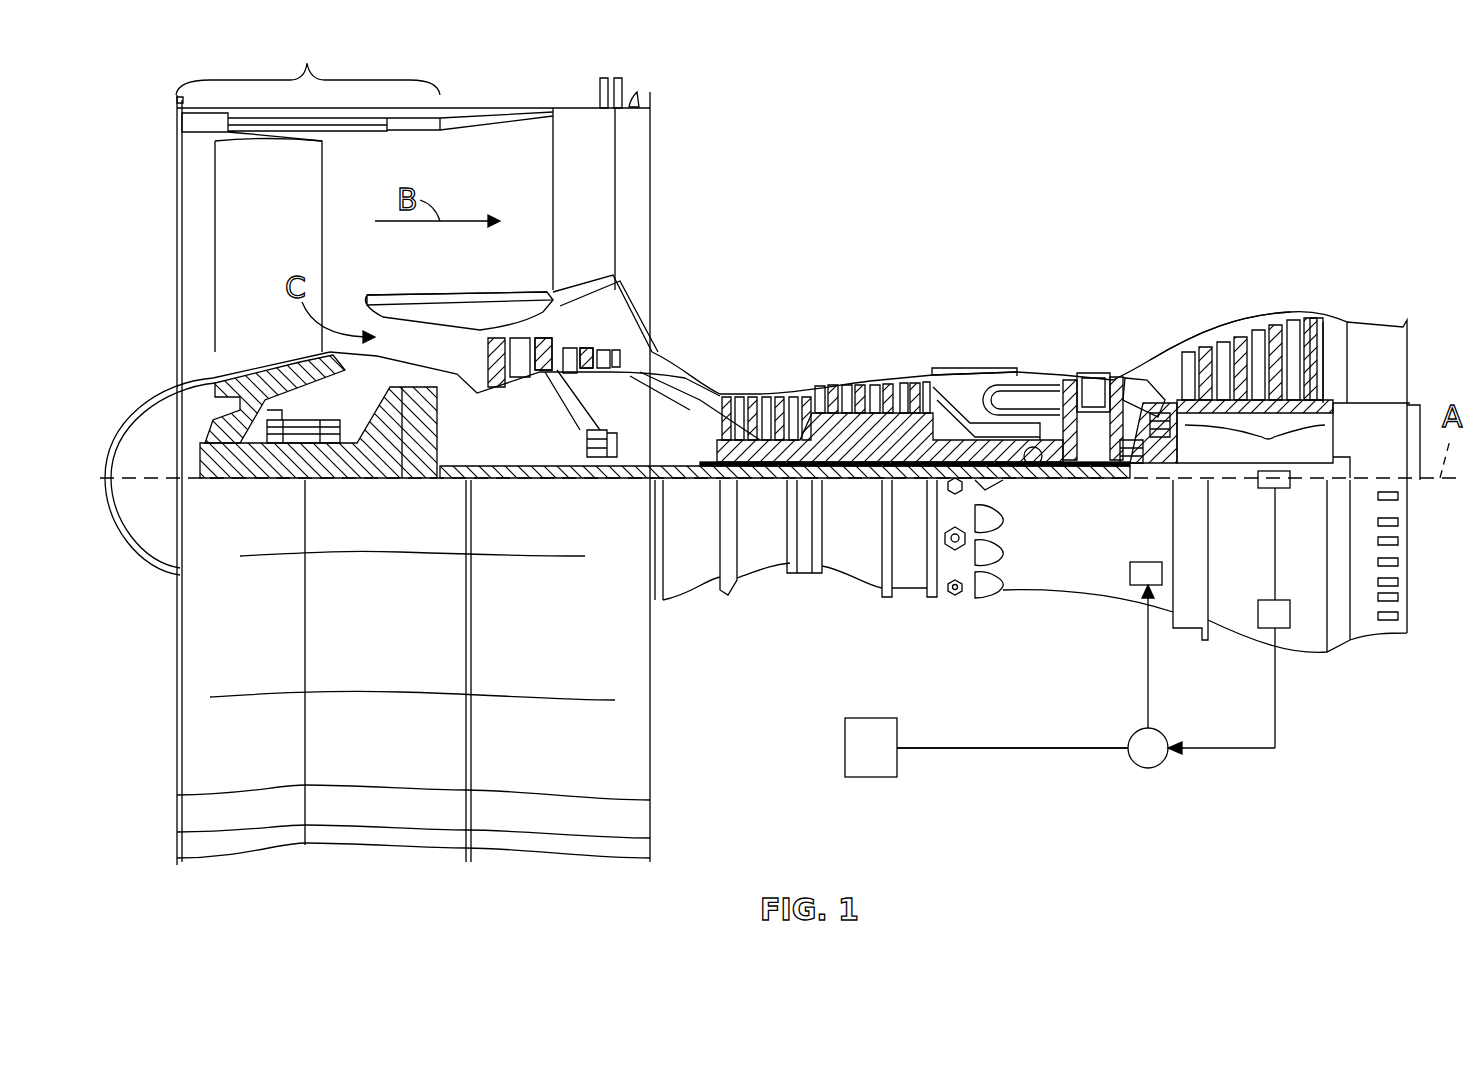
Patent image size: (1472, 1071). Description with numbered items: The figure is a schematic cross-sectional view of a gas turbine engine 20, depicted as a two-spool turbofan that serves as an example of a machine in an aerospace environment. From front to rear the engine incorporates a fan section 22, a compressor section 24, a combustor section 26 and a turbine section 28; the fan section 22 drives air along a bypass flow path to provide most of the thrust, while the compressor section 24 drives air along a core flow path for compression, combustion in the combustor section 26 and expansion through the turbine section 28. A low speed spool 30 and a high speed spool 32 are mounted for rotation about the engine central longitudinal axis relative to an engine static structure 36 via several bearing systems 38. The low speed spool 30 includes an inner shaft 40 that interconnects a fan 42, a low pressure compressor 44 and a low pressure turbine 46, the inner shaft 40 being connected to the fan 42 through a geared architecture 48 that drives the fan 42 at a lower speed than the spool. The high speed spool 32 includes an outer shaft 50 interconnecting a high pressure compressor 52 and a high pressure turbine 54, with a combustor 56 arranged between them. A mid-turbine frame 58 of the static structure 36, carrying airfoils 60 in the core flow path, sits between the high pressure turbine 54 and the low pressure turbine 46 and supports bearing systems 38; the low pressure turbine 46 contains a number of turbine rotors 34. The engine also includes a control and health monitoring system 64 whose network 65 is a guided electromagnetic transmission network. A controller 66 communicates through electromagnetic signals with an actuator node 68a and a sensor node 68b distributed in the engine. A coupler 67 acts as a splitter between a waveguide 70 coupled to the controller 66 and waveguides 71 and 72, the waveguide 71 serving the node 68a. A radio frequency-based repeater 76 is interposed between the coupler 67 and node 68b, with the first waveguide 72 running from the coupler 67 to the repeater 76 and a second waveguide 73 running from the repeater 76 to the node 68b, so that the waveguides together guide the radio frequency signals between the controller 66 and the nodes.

The gas turbine engine 20 is at (1240, 152).
The fan section 22 is at (308, 63).
The compressor section 24 is at (825, 306).
The combustor section 26 is at (1003, 311).
The turbine section 28 is at (1129, 286).
The low speed spool 30 is at (875, 480).
The high speed spool 32 is at (925, 420).
The turbine rotors 34 is at (1263, 439).
The engine static structure 36 is at (915, 598).
The bearing systems 38 is at (280, 450).
The inner shaft 40 is at (665, 478).
The fan 42 is at (280, 226).
The low pressure compressor 44 is at (565, 350).
The low pressure turbine 46 is at (1262, 335).
The geared architecture 48 is at (415, 445).
The outer shaft 50 is at (1036, 462).
The high pressure compressor 52 is at (832, 445).
The high pressure turbine 54 is at (1093, 372).
The combustor 56 is at (1017, 398).
The mid-turbine frame 58 is at (1136, 360).
The airfoils 60 is at (1133, 380).
The control and health monitoring system 64 is at (1207, 778).
The network 65 is at (1302, 758).
The controller 66 is at (850, 743).
The coupler 67 is at (1158, 768).
The actuator node 68a is at (1125, 572).
The sensor node 68b is at (1275, 490).
The waveguide 70 is at (957, 748).
The waveguide 71 is at (1147, 665).
The first waveguide 72 is at (1275, 717).
The second waveguide 73 is at (1275, 553).
The radio frequency-based repeater 76 is at (1280, 628).